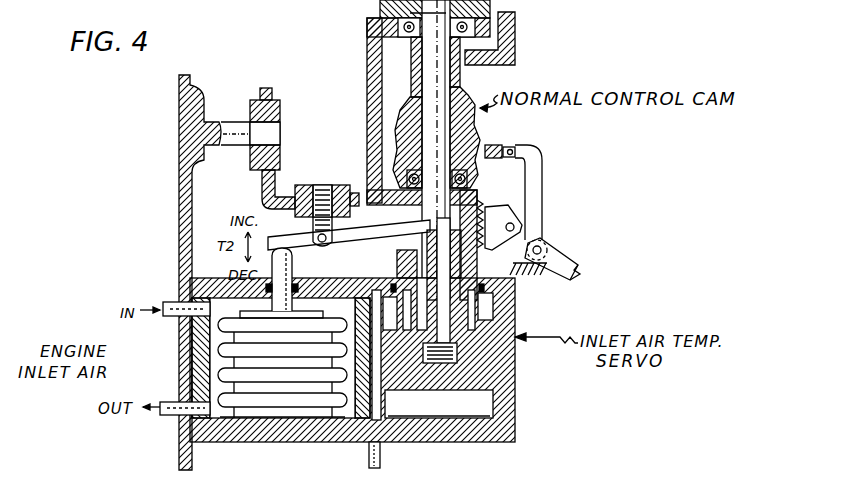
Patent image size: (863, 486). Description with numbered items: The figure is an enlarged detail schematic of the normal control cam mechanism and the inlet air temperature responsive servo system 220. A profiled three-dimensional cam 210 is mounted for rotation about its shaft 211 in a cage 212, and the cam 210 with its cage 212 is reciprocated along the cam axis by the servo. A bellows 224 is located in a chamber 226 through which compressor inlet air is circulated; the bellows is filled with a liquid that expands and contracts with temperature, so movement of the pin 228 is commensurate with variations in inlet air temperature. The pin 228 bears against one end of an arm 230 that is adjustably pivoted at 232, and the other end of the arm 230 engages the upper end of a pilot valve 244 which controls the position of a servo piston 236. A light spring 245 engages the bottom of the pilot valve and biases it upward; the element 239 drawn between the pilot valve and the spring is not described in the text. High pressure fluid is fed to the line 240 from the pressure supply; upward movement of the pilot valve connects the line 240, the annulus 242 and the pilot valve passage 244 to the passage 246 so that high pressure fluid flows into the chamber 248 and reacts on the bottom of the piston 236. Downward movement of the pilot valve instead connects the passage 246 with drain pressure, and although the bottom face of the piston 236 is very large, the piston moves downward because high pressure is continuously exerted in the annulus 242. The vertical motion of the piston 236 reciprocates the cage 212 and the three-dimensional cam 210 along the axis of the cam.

The three-dimensional cam 210 is at (470, 125).
The shaft 211 is at (432, 70).
The cage 212 is at (367, 100).
The inlet air temperature responsive servo system 220 is at (208, 204).
The bellows 224 is at (260, 398).
The chamber 226 is at (192, 296).
The pin 228 is at (292, 269).
The arm 230 is at (349, 217).
The adjustable pivot 232 is at (336, 240).
The servo piston 236 is at (493, 393).
The servo valve rod 239 is at (452, 343).
The line 240 is at (380, 463).
The annulus 242 is at (482, 318).
The pilot valve 244 is at (463, 302).
The light spring 245 is at (458, 362).
The passage 246 is at (400, 393).
The chamber 248 is at (478, 405).